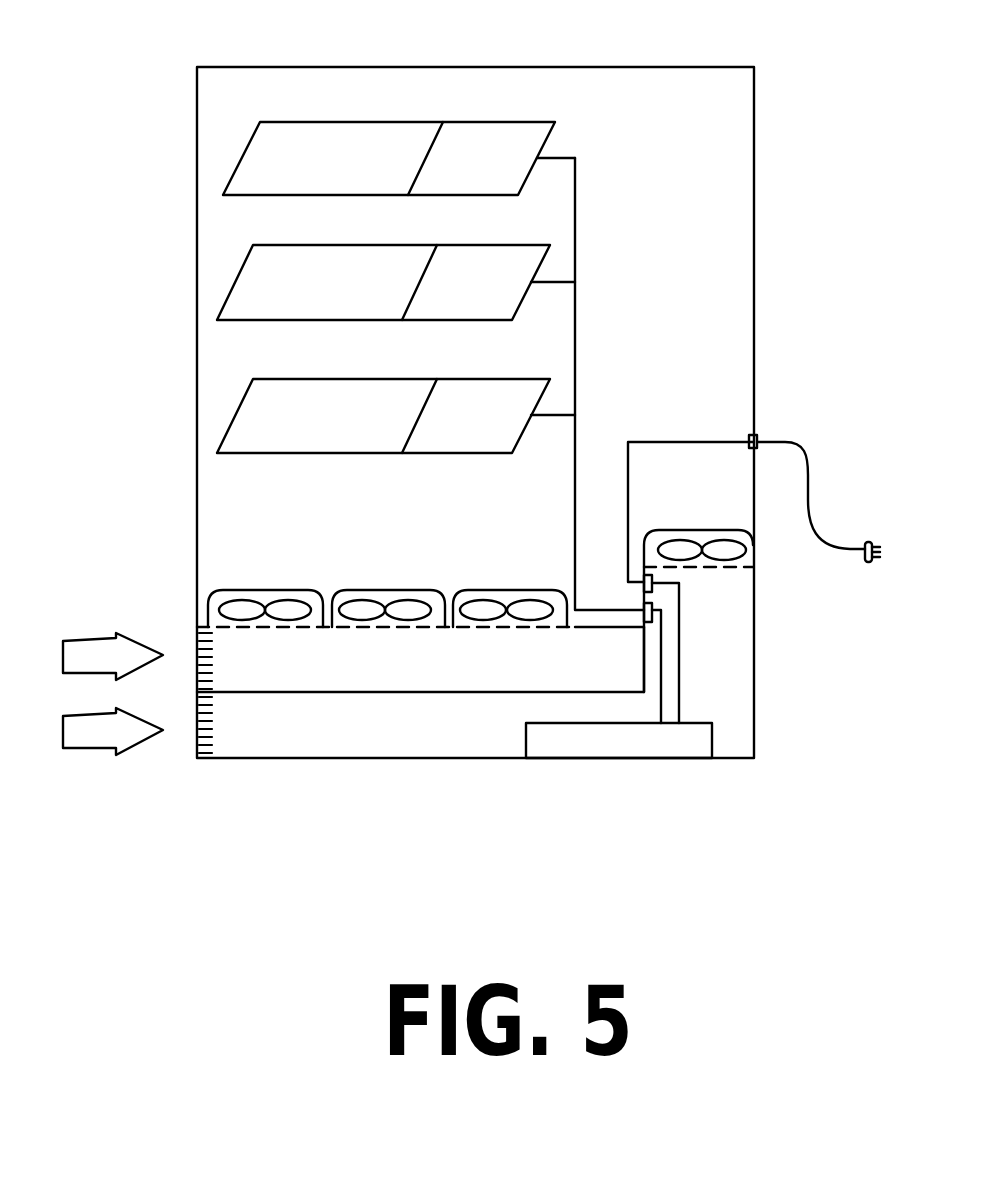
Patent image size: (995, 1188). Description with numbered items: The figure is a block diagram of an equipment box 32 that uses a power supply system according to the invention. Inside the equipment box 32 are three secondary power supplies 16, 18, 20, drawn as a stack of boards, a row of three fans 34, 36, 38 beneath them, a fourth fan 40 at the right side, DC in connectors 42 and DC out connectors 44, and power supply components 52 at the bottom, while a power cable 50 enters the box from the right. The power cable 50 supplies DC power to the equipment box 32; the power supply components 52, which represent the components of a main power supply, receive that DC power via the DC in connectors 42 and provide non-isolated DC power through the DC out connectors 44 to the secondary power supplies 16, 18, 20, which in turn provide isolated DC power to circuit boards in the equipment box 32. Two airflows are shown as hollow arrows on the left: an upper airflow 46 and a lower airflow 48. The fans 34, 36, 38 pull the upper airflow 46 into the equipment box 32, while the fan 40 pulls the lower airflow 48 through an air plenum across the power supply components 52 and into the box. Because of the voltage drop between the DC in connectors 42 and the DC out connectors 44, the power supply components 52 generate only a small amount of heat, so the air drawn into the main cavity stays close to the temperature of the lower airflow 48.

The equipment box 32 is at (250, 65).
The secondary power supply 16 is at (503, 171).
The secondary power supply 18 is at (496, 296).
The secondary power supply 20 is at (496, 430).
The fan 34 is at (277, 590).
The fan 36 is at (407, 590).
The fan 38 is at (517, 590).
The fan 40 is at (713, 530).
The DC in connectors 42 is at (655, 581).
The DC out connectors 44 is at (655, 608).
The upper airflow 46 is at (85, 640).
The lower airflow 48 is at (85, 715).
The power cable 50 is at (810, 500).
The power supply components 52 is at (526, 735).